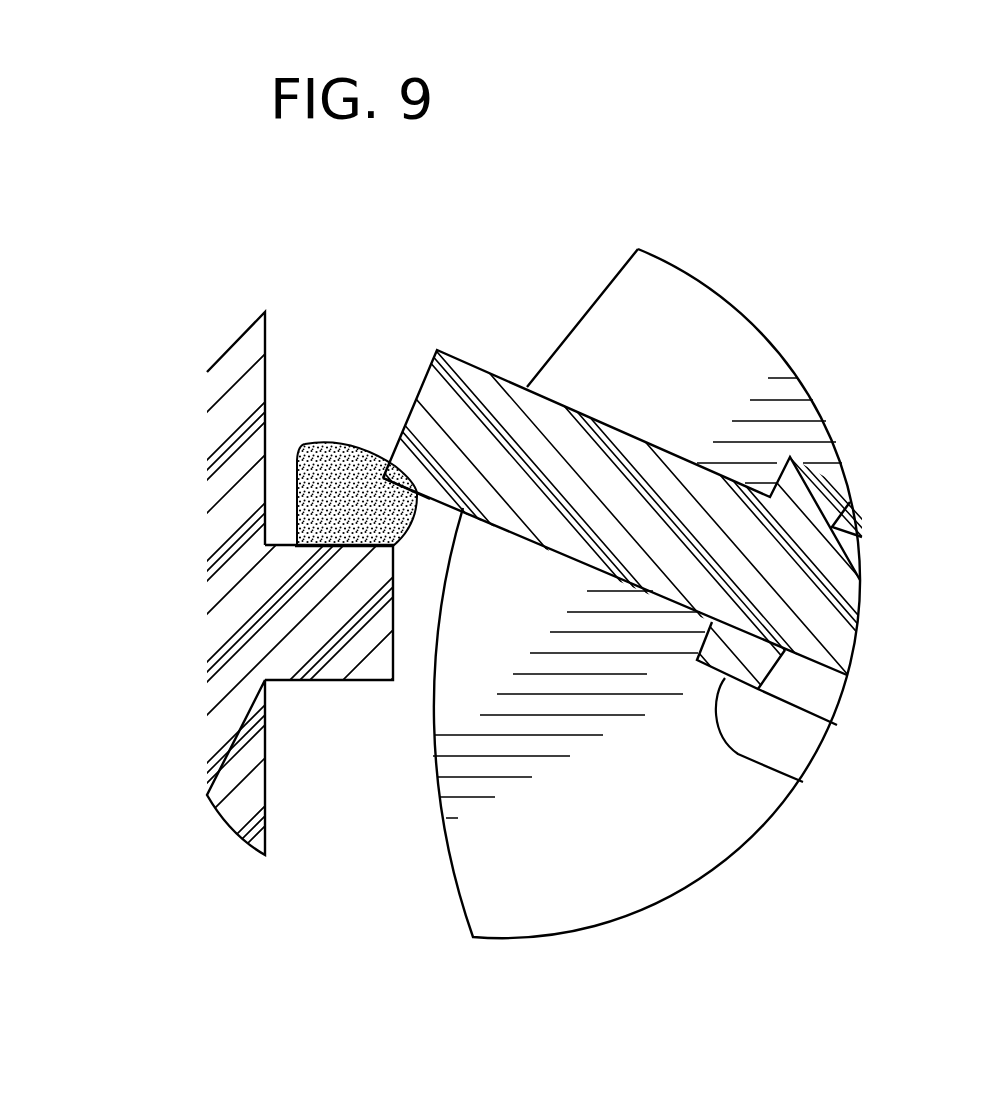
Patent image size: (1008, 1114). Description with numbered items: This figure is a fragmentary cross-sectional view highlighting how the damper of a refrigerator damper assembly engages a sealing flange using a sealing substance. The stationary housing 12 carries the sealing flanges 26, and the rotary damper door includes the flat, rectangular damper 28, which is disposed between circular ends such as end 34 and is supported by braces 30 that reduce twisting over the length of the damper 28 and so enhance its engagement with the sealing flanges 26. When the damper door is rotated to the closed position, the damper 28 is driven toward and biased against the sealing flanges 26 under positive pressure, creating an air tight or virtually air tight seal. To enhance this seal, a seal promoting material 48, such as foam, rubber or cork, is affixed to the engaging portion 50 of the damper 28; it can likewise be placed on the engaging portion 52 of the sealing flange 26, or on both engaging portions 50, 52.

The stationary housing 12 is at (207, 428).
The sealing flanges 26 is at (337, 672).
The damper 28 is at (415, 395).
The braces 30 is at (803, 782).
The end 34 is at (605, 323).
The seal promoting material 48 is at (318, 447).
The engaging portion 50 is at (390, 457).
The engaging portion 52 is at (377, 560).